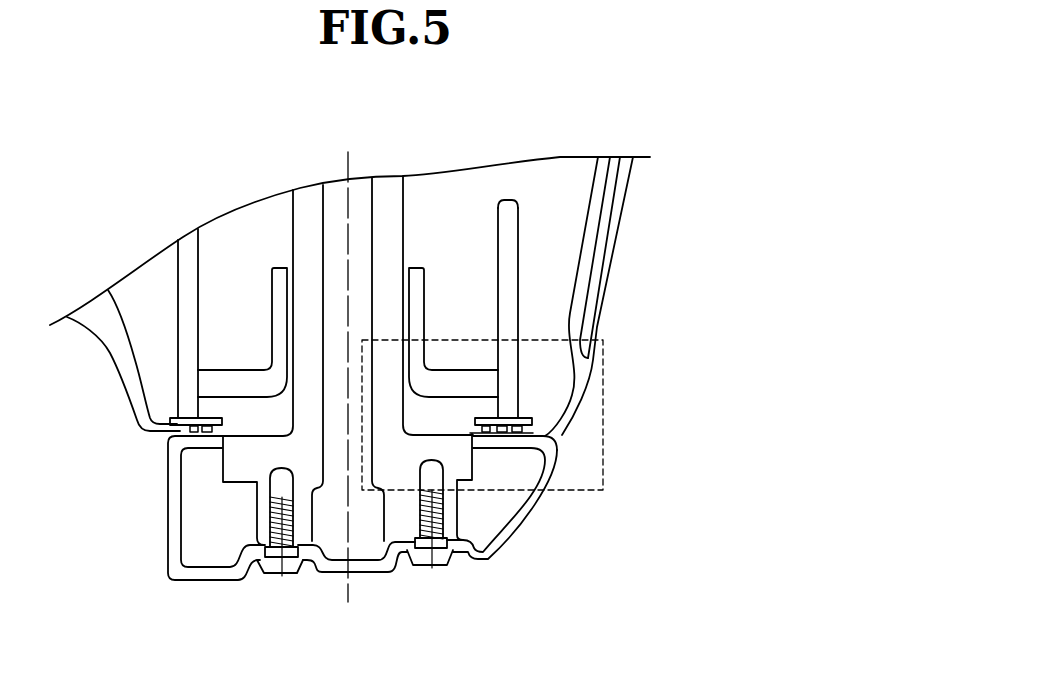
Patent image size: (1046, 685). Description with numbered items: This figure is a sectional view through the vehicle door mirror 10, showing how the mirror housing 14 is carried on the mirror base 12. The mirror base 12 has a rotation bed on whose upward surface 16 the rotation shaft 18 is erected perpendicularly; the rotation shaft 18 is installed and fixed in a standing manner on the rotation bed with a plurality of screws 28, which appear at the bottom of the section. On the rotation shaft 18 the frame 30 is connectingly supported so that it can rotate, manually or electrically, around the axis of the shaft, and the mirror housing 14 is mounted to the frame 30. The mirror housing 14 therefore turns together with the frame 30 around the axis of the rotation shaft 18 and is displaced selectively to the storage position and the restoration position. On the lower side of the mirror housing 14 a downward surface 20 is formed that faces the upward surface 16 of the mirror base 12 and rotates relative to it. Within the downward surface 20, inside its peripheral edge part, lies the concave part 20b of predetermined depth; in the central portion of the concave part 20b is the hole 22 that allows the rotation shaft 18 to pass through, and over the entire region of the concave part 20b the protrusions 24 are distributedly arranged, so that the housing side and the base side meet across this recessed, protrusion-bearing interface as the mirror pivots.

The vehicle door mirror 10 is at (722, 123).
The mirror base 12 is at (525, 517).
The mirror housing 14 is at (622, 237).
The upward surface 16 is at (520, 427).
The rotation shaft 18 is at (387, 203).
The downward surface 20 is at (557, 440).
The concave part 20b is at (548, 475).
The hole 22 is at (475, 428).
The protrusions 24 is at (538, 443).
The screws 28 is at (274, 574).
The frame 30 is at (190, 257).